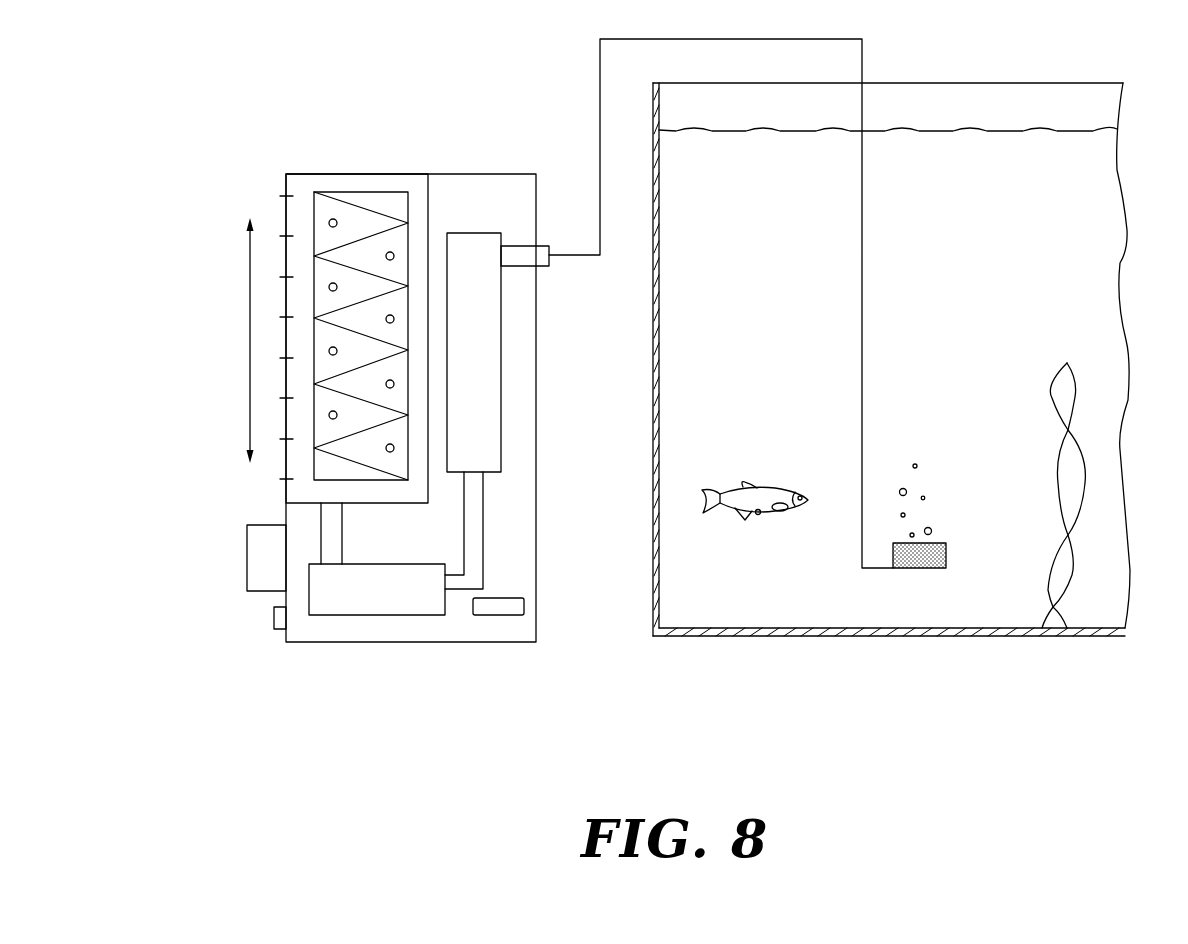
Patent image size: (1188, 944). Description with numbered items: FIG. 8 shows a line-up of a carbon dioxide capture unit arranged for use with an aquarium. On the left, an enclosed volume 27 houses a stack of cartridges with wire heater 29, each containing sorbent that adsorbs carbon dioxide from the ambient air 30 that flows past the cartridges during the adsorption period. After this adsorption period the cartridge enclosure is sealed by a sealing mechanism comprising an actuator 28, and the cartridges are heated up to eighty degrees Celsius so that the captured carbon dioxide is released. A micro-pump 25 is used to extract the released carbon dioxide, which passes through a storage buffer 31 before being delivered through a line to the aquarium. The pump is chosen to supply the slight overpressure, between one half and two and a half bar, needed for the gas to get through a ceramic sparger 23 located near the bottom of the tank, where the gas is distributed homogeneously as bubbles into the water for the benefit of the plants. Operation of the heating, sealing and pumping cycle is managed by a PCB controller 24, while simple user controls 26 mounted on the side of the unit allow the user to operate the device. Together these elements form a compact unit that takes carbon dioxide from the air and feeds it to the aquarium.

The sparger 23 is at (919, 557).
The PCB controller 24 is at (498, 608).
The micro-pump 25 is at (379, 598).
The simple user controls 26 is at (250, 558).
The enclosed volume 27 is at (418, 205).
The actuator 28 is at (252, 199).
The cartridge with wire heater 29 is at (352, 190).
The ambient air 30 is at (249, 336).
The storage buffer 31 is at (473, 247).